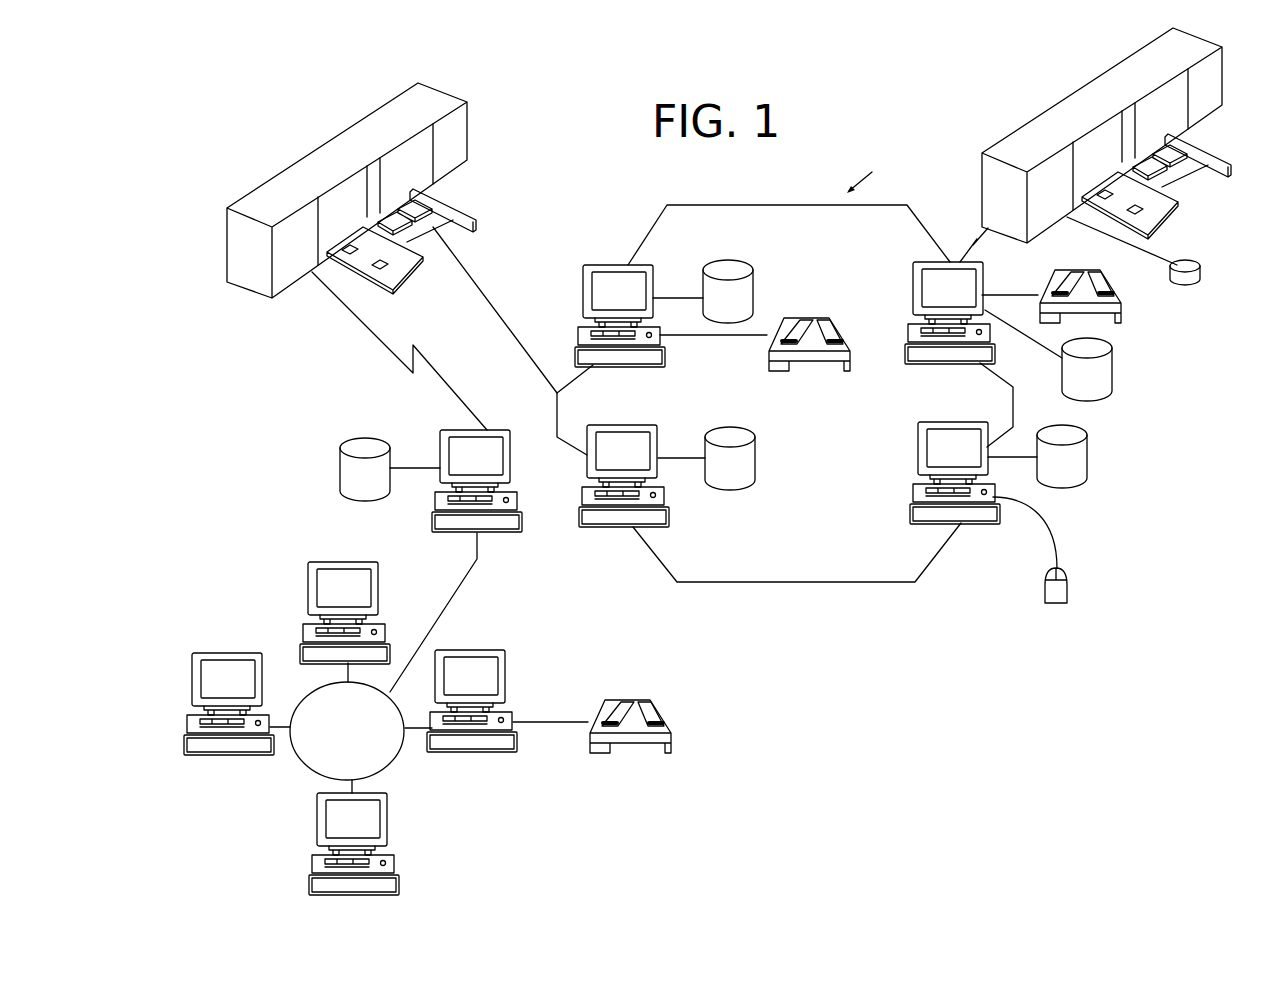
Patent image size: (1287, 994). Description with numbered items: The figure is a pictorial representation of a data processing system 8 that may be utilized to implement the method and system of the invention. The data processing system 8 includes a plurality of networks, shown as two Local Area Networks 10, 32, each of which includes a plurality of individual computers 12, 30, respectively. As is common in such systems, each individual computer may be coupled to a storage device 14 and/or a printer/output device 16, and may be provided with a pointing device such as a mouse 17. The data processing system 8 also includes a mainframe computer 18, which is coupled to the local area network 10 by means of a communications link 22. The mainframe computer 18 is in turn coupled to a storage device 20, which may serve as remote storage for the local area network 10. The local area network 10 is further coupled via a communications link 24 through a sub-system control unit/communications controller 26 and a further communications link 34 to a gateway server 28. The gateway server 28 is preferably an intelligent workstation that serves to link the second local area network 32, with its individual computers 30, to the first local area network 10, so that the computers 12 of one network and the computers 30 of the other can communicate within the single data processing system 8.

The data processing system 8 is at (866, 174).
The local area network 10 is at (763, 583).
The individual computer 12 is at (607, 263).
The storage device 14 is at (340, 447).
The printer/output device 16 is at (837, 323).
The mouse 17 is at (1067, 588).
The mainframe computer 18 is at (1063, 102).
The storage device 20 is at (1177, 287).
The communications link 22 is at (975, 242).
The communications link 24 is at (485, 290).
The sub-system control unit/communications controller 26 is at (288, 170).
The gateway server 28 is at (437, 437).
The individual computer 30 is at (308, 585).
The local area network 32 is at (298, 760).
The communications link 34 is at (347, 312).